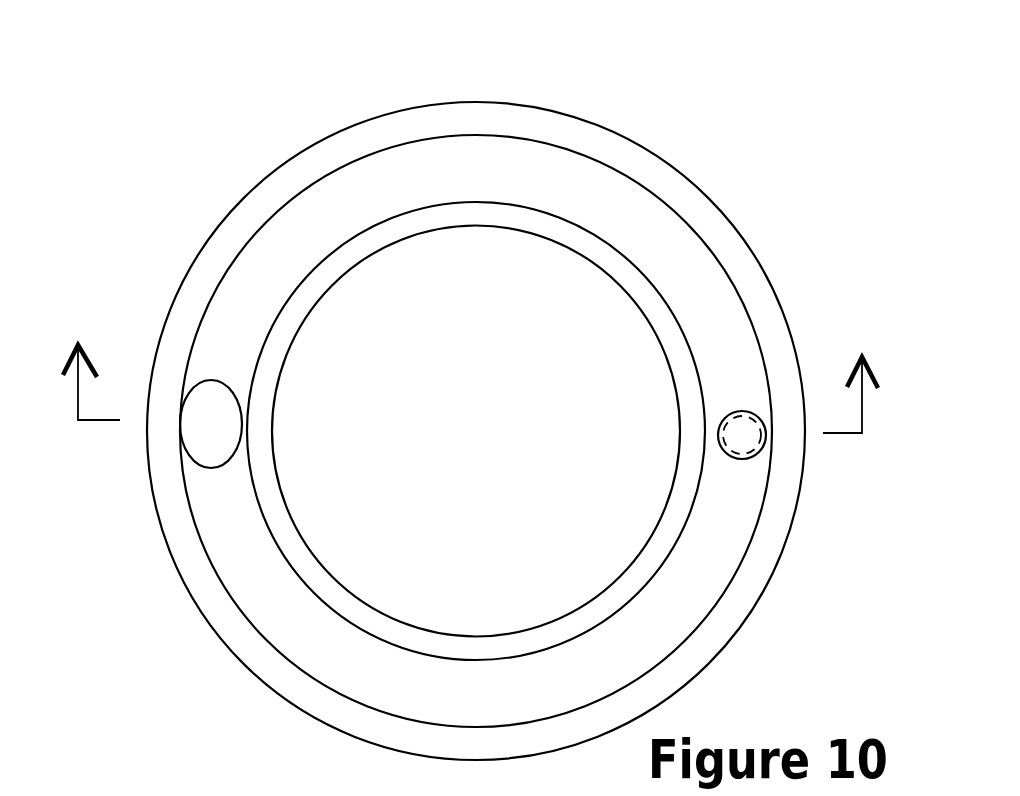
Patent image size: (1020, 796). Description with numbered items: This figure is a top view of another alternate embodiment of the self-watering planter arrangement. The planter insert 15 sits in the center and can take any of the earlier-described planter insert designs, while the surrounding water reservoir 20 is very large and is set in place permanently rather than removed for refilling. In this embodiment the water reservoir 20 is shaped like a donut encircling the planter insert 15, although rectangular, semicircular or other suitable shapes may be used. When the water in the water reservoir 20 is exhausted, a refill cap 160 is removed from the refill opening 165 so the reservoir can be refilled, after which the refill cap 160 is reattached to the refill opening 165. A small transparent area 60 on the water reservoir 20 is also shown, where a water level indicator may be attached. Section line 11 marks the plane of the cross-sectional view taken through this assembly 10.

The cover / lid assembly 10 is at (642, 150).
The planter insert 15 is at (603, 273).
The water reservoir 20 is at (713, 255).
The small transparent area 60 is at (213, 380).
The refill cap 160 is at (717, 431).
The refill opening 165 is at (762, 442).
The section line 11— 11 is at (469, 360).